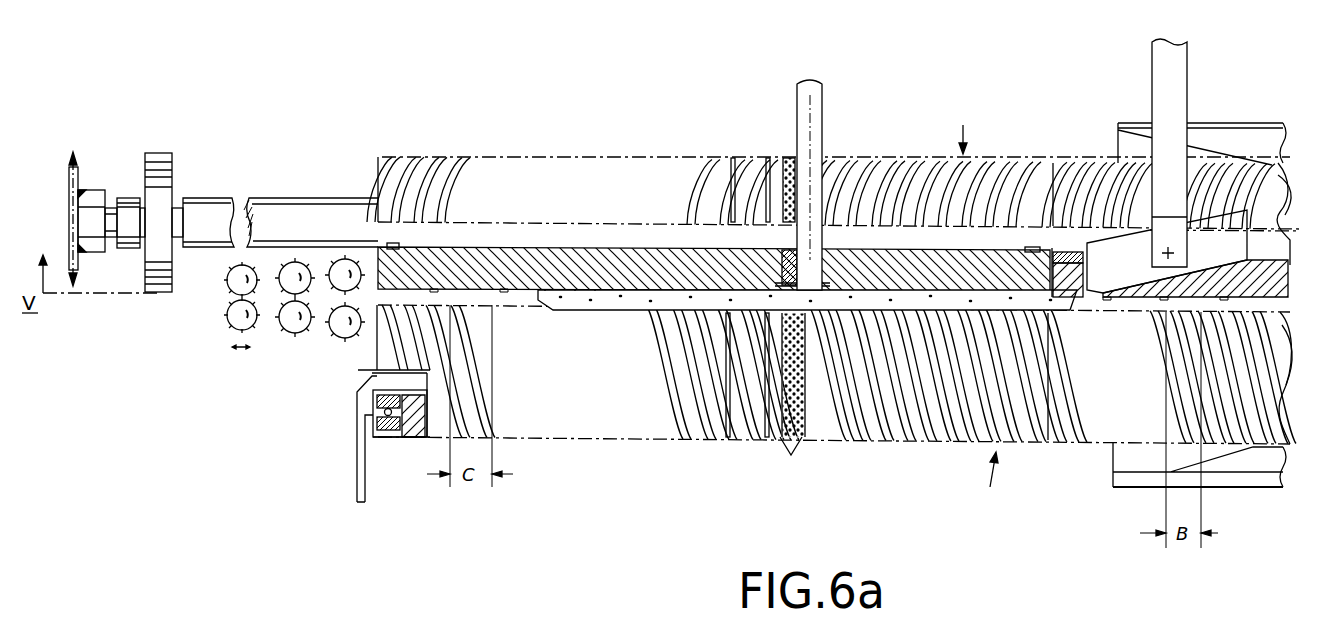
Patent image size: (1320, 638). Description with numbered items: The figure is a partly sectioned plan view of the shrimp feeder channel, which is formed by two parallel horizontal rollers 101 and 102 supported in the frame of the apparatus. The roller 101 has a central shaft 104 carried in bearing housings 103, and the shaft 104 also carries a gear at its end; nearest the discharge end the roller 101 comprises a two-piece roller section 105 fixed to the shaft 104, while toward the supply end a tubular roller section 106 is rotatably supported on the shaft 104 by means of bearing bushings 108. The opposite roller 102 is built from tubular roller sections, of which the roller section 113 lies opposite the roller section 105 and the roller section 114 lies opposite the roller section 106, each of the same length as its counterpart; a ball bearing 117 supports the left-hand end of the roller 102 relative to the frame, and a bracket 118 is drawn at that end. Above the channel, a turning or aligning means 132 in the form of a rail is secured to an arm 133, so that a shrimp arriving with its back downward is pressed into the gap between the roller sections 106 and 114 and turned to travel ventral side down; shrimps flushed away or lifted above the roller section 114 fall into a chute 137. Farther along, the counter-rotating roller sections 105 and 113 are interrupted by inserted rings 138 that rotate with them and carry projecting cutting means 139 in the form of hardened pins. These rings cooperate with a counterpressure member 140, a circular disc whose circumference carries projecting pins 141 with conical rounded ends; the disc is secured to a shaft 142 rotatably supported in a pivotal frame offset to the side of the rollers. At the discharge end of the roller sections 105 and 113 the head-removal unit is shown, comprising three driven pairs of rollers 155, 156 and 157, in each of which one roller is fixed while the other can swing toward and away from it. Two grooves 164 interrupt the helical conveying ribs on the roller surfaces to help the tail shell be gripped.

The roller 101 is at (983, 133).
The roller 102 is at (993, 481).
The bearing housing 103 is at (162, 158).
The central shaft 104 is at (296, 201).
The two-piece roller section 105 is at (437, 168).
The tubular roller section 106 is at (1098, 166).
The bearing bushing 108 is at (1040, 249).
The tubular roller section 113 is at (576, 425).
The tubular roller section 114 is at (1068, 438).
The ball bearing 117 is at (392, 420).
The support bracket 118 is at (366, 498).
The turning or aligning means 132 is at (1195, 232).
The arm 133 is at (1175, 52).
The chute 137 is at (1225, 460).
The inserted ring 138 is at (805, 425).
The cutting means 139 is at (798, 455).
The counterpressure member 140 is at (860, 300).
The projecting pin 141 is at (595, 291).
The shaft 142 is at (812, 100).
The pair of rollers 155 is at (340, 332).
The pair of rollers 156 is at (283, 330).
The pair of rollers 157 is at (228, 273).
The groove 164 is at (767, 158).